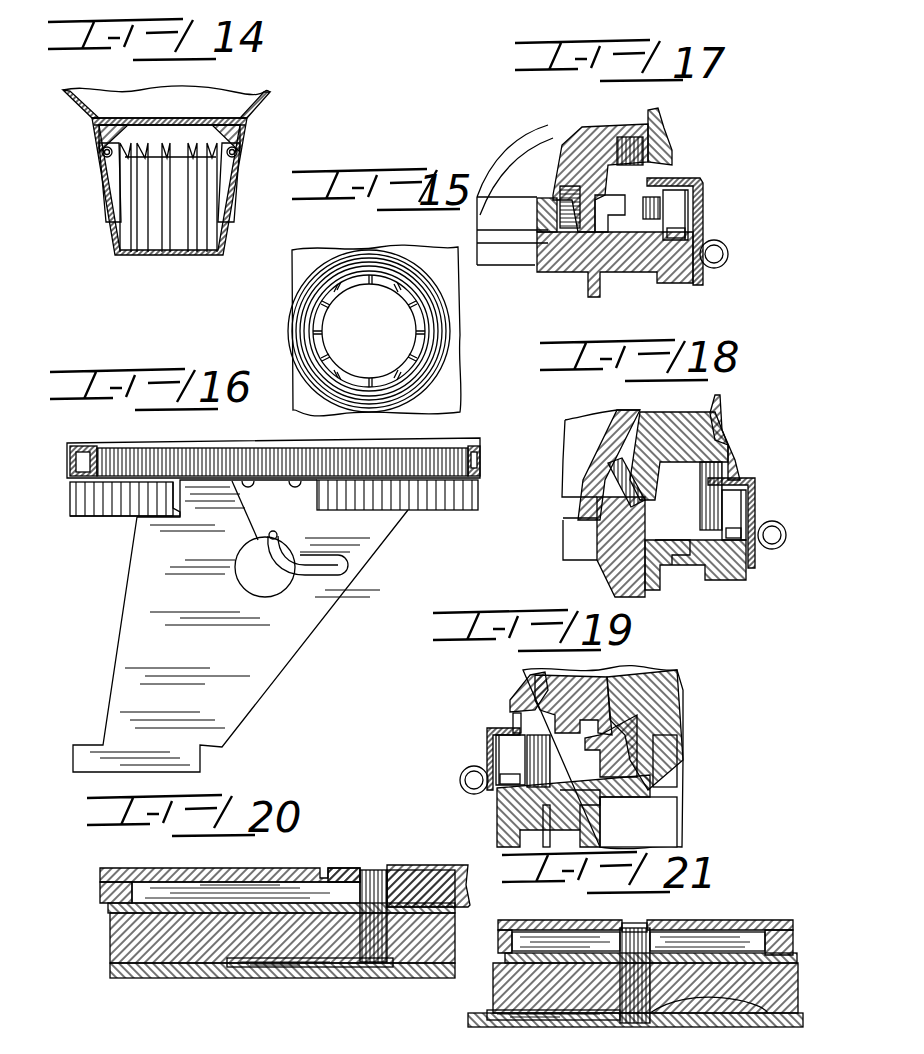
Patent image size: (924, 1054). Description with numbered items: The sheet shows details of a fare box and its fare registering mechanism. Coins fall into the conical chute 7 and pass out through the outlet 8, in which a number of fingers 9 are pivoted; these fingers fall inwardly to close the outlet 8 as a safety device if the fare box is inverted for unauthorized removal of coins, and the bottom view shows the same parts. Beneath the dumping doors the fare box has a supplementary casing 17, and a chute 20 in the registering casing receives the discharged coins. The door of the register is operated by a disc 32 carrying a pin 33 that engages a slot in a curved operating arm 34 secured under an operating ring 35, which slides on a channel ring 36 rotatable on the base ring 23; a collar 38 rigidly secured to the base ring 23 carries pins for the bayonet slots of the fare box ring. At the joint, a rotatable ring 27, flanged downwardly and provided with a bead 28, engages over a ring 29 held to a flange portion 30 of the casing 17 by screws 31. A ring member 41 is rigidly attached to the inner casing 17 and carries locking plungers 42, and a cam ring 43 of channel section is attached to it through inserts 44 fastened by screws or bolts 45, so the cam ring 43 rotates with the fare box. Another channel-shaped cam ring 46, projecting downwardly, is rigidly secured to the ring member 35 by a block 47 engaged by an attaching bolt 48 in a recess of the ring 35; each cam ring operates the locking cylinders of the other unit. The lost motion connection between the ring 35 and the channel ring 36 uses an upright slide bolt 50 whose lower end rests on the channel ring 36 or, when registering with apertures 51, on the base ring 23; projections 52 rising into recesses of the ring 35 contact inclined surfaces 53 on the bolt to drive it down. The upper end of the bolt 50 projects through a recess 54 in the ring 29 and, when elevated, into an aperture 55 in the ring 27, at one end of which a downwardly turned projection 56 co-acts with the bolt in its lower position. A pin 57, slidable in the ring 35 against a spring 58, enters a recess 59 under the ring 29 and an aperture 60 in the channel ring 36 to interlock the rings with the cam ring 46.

In FIG. 14, the conical chute 7 is at (271, 93).
In FIG. 15, the conical chute 7 is at (448, 398).
In FIG. 14, the outlet 8 is at (232, 195).
In FIG. 15, the outlet 8 is at (450, 320).
In FIG. 14, the fingers 9 is at (214, 202).
In FIG. 15, the fingers 9 is at (396, 377).
In FIG. 17, the supplementary casing 17 is at (548, 175).
In FIG. 18, the supplementary casing 17 is at (630, 412).
In FIG. 19, the supplementary casing 17 is at (645, 710).
In FIG. 16, the chute 20 is at (283, 660).
In FIG. 19, the chute 20 is at (598, 840).
In FIG. 16, the base ring 23 is at (426, 497).
In FIG. 17, the base ring 23 is at (675, 275).
In FIG. 18, the base ring 23 is at (743, 568).
In FIG. 19, the base ring 23 is at (530, 820).
In FIG. 17, the rotatable ring 27 is at (704, 186).
In FIG. 18, the rotatable ring 27 is at (750, 480).
In FIG. 19, the rotatable ring 27 is at (497, 733).
In FIG. 20, the rotatable ring 27 is at (300, 875).
In FIG. 21, the rotatable ring 27 is at (740, 923).
In FIG. 17, the bead 28 is at (728, 252).
In FIG. 18, the bead 28 is at (779, 548).
In FIG. 19, the bead 28 is at (462, 793).
In FIG. 17, the ring 29 is at (602, 168).
In FIG. 18, the ring 29 is at (718, 440).
In FIG. 19, the ring 29 is at (530, 682).
In FIG. 20, the ring 29 is at (463, 886).
In FIG. 21, the ring 29 is at (780, 937).
In FIG. 17, the flange portion 30 is at (612, 140).
In FIG. 18, the flange portion 30 is at (680, 437).
In FIG. 19, the flange portion 30 is at (558, 690).
In FIG. 17, the screws 31 is at (657, 148).
In FIG. 16, the disc 32 is at (285, 590).
In FIG. 16, the pin 33 is at (269, 537).
In FIG. 16, the curved operating arm 34 is at (330, 512).
In FIG. 16, the operating ring 35 is at (292, 462).
In FIG. 17, the operating ring 35 is at (690, 207).
In FIG. 18, the operating ring 35 is at (746, 495).
In FIG. 19, the operating ring 35 is at (490, 752).
In FIG. 20, the operating ring 35 is at (122, 942).
In FIG. 21, the operating ring 35 is at (498, 993).
In FIG. 16, the channel ring 36 is at (482, 458).
In FIG. 17, the channel ring 36 is at (684, 226).
In FIG. 18, the channel ring 36 is at (746, 510).
In FIG. 19, the channel ring 36 is at (510, 800).
In FIG. 20, the channel ring 36 is at (202, 970).
In FIG. 21, the channel ring 36 is at (500, 1020).
In FIG. 16, the ring or collar 38 is at (481, 503).
In FIG. 17, the ring or collar 38 is at (698, 278).
In FIG. 18, the ring or collar 38 is at (750, 574).
In FIG. 19, the ring or collar 38 is at (503, 815).
In FIG. 18, the ring member 41 is at (660, 440).
In FIG. 19, the ring member 41 is at (614, 742).
In FIG. 18, the locking plungers 42 is at (602, 463).
In FIG. 17, the cam ring 43 is at (557, 232).
In FIG. 18, the cam ring 43 is at (637, 550).
In FIG. 19, the cam ring 43 is at (655, 770).
In FIG. 17, the inserts 44 is at (556, 190).
In FIG. 17, the screws or bolts 45 is at (572, 182).
In FIG. 16, the cam ring 46 is at (452, 442).
In FIG. 17, the cam ring 46 is at (623, 218).
In FIG. 18, the cam ring 46 is at (678, 568).
In FIG. 19, the cam ring 46 is at (570, 800).
In FIG. 20, the cam ring 46 is at (188, 910).
In FIG. 21, the cam ring 46 is at (538, 943).
In FIG. 17, the block 47 is at (676, 186).
In FIG. 17, the attaching screw or bolt 48 is at (655, 232).
In FIG. 20, the slide bolt 50 is at (373, 880).
In FIG. 21, the slide bolt 50 is at (707, 1018).
In FIG. 20, the apertures 51 is at (275, 972).
In FIG. 21, the apertures 51 is at (652, 1022).
In FIG. 20, the projections 52 is at (247, 970).
In FIG. 21, the projections 52 is at (620, 1020).
In FIG. 20, the inclined surfaces 53 is at (370, 957).
In FIG. 21, the inclined surfaces 53 is at (627, 1022).
In FIG. 20, the recess 54 is at (235, 890).
In FIG. 21, the recess 54 is at (697, 940).
In FIG. 20, the recess or aperture 55 is at (343, 872).
In FIG. 21, the recess or aperture 55 is at (680, 922).
In FIG. 20, the downwardly turned projection 56 is at (321, 876).
In FIG. 21, the downwardly turned projection 56 is at (627, 928).
In FIG. 19, the pin 57 is at (518, 705).
In FIG. 19, the spring 58 is at (520, 755).
In FIG. 19, the recess 59 is at (510, 724).
In FIG. 19, the aperture 60 is at (546, 805).